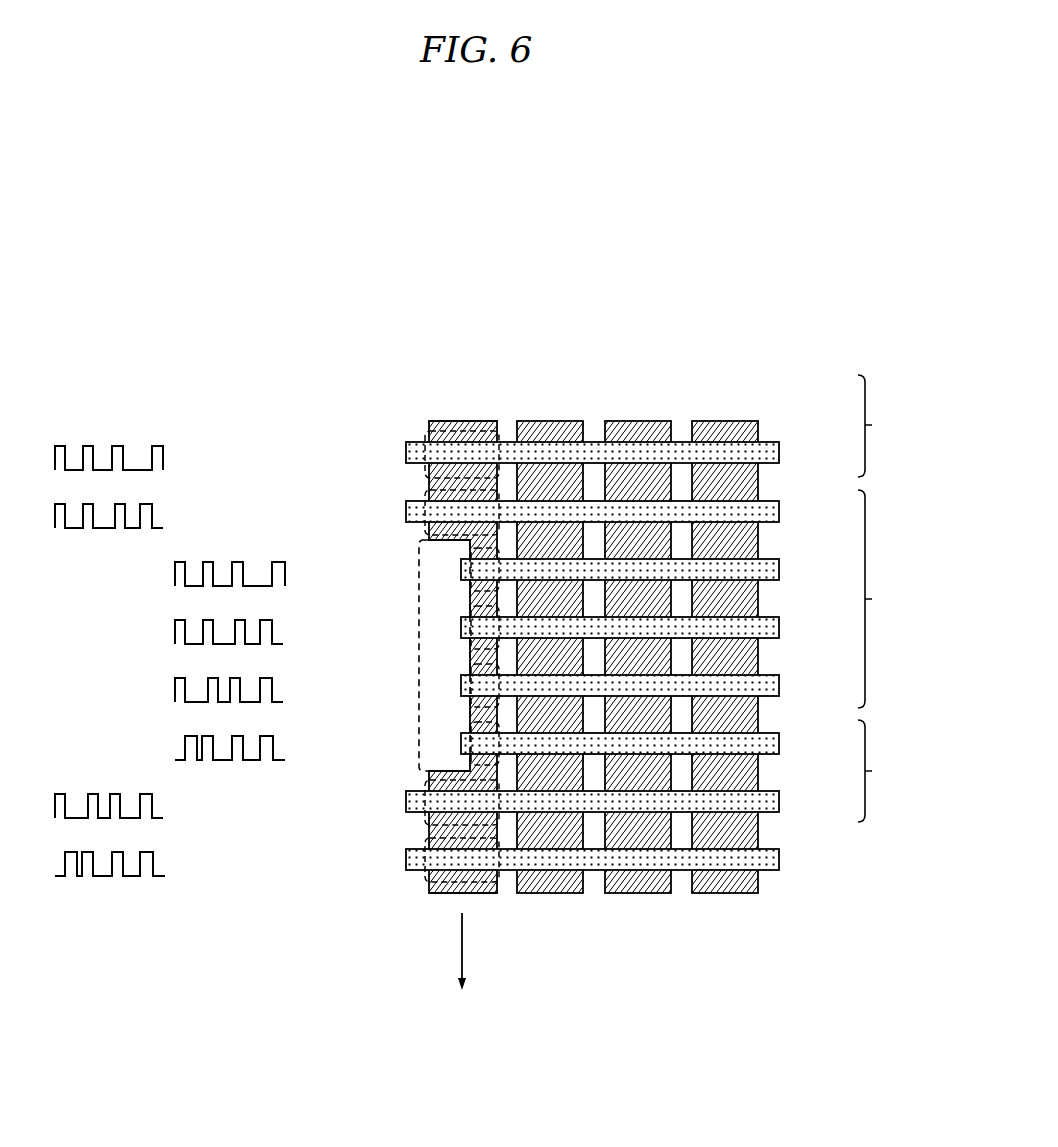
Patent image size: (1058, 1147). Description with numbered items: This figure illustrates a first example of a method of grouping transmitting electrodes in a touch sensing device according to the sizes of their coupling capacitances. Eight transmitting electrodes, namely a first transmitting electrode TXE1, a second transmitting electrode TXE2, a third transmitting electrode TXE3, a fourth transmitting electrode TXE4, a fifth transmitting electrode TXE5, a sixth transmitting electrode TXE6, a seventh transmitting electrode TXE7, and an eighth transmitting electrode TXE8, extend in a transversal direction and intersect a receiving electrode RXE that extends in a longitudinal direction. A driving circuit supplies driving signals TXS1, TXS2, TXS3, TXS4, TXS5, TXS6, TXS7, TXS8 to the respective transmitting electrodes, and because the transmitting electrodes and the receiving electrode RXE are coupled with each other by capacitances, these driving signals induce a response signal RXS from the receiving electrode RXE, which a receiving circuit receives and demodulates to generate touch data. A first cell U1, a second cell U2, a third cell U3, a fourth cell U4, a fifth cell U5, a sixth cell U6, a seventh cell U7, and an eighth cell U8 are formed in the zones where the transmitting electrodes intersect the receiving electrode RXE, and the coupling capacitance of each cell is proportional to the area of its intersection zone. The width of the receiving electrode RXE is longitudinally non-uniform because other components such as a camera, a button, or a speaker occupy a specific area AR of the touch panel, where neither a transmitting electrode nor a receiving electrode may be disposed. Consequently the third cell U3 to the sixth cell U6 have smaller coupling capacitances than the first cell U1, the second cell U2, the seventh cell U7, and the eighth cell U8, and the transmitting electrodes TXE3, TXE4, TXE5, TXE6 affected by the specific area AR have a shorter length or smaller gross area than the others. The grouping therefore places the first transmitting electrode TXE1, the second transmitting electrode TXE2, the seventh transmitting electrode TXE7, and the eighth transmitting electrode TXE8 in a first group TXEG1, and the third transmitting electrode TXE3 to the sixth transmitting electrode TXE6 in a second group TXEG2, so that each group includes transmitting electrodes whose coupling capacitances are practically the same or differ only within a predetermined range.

The first group TXEG1 is at (879, 416).
The second group TXEG2 is at (863, 535).
The first transmitting electrode TXE1 is at (779, 442).
The second transmitting electrode TXE2 is at (779, 501).
The third transmitting electrode TXE3 is at (779, 559).
The fourth transmitting electrode TXE4 is at (779, 617).
The fifth transmitting electrode TXE5 is at (779, 675).
The sixth transmitting electrode TXE6 is at (779, 733).
The seventh transmitting electrode TXE7 is at (779, 791).
The eighth transmitting electrode TXE8 is at (779, 849).
The driving signal TXS1 is at (352, 453).
The driving signal TXS2 is at (352, 512).
The driving signal TXS3 is at (350, 802).
The driving signal TXS4 is at (350, 860).
The driving signal TXS5 is at (347, 570).
The driving signal TXS6 is at (347, 628).
The driving signal TXS7 is at (347, 686).
The driving signal TXS8 is at (347, 744).
The first cell U1 is at (439, 444).
The second cell U2 is at (439, 504).
The third cell U3 is at (470, 549).
The fourth cell U4 is at (470, 606).
The fifth cell U5 is at (470, 664).
The sixth cell U6 is at (470, 721).
The seventh cell U7 is at (439, 795).
The eighth cell U8 is at (439, 852).
The specific area AR is at (425, 532).
The receiving electrode RXE is at (470, 420).
The response signal RXS is at (488, 951).